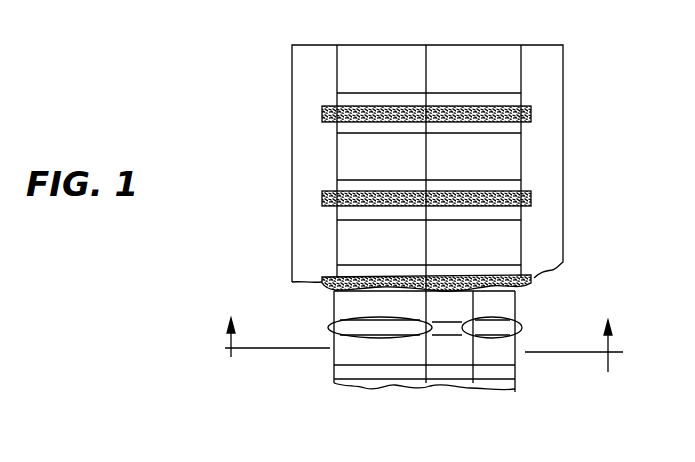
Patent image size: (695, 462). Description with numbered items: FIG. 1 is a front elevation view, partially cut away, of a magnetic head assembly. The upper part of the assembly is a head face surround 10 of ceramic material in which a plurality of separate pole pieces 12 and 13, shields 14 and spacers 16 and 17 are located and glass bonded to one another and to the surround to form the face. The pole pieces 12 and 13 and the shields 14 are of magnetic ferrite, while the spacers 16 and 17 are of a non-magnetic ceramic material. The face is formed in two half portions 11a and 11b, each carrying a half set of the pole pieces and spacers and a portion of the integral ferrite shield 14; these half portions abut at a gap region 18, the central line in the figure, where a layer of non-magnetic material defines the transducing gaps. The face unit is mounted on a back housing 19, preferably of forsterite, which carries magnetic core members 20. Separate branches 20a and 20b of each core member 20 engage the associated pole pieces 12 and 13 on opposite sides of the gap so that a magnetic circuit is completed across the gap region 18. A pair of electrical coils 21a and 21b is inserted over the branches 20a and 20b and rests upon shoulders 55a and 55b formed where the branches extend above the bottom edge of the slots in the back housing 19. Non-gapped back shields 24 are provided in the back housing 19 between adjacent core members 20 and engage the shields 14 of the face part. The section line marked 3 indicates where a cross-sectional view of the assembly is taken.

The head face surround 10 is at (552, 63).
The face half portion 11a is at (298, 61).
The face half portion 11b is at (565, 93).
The pole piece 12 is at (348, 151).
The pole piece 13 is at (510, 163).
The shield 14 is at (322, 110).
The spacer 16 is at (347, 216).
The spacer 17 is at (510, 188).
The gap region 18 is at (427, 75).
The back housing 19 is at (516, 383).
The magnetic core member 20 is at (447, 337).
The core member branch 20a is at (352, 327).
The core member branch 20b is at (502, 327).
The electrical coil 21a is at (335, 320).
The electrical coil 21b is at (478, 318).
The back shield 24 is at (345, 368).
The shoulder 55a is at (359, 350).
The shoulder 55b is at (486, 360).
The section line 3- 3 is at (424, 332).